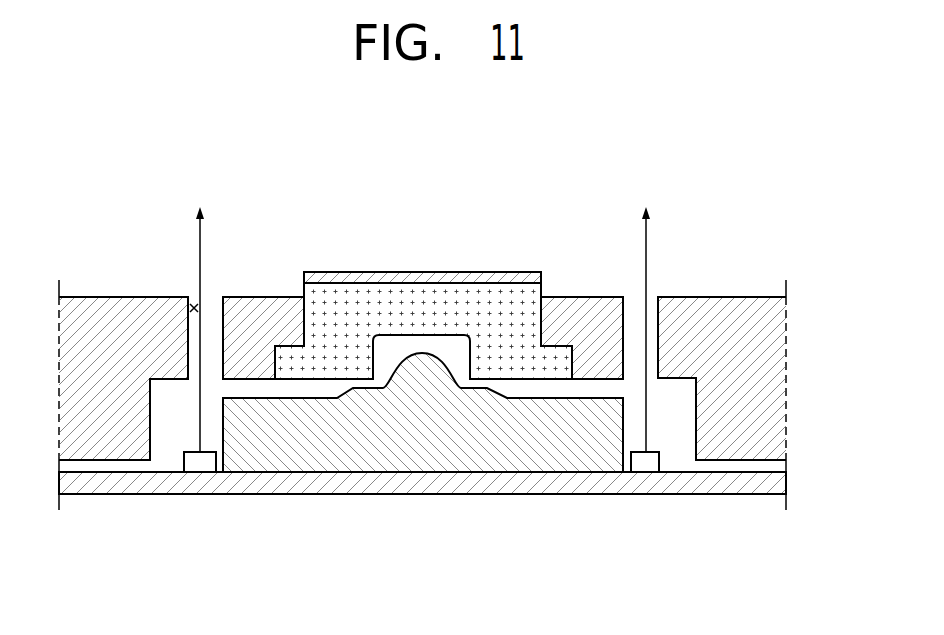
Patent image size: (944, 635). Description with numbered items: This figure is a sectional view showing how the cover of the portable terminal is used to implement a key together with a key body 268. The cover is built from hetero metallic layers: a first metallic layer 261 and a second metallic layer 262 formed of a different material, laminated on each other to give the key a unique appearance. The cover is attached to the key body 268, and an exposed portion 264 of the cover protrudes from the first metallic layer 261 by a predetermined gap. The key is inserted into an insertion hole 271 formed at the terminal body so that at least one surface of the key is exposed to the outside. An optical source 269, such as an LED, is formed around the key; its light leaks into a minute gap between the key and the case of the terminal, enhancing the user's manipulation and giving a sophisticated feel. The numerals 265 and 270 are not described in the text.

The first metallic layer 261 is at (243, 303).
The second metallic layer 262 is at (290, 346).
The exposed portion 264 is at (543, 288).
The upper electrode 265 is at (366, 277).
The key body 268 is at (423, 460).
The optical source 269 is at (645, 460).
The pixel 270 is at (697, 216).
The insertion hole 271 is at (193, 306).